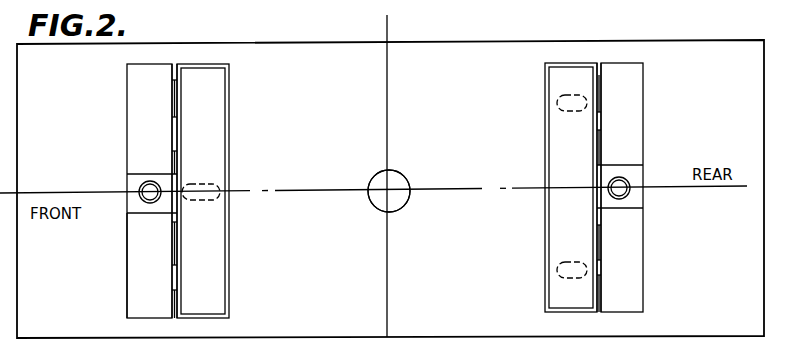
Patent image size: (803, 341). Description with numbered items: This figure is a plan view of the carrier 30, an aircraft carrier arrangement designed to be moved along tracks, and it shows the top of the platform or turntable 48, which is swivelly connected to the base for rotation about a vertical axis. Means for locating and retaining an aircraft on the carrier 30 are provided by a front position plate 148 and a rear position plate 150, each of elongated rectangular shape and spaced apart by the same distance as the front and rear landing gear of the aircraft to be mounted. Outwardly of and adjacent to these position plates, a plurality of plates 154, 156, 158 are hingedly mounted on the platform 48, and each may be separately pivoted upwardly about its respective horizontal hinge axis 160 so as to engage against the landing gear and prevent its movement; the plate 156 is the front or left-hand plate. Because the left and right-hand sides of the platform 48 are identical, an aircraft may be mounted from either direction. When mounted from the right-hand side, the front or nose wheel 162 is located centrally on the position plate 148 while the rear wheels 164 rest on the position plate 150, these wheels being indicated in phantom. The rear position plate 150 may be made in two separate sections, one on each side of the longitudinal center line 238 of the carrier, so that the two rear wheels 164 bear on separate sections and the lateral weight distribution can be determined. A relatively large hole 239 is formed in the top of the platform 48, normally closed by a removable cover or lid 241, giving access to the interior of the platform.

The carrier 30 is at (340, 40).
The platform or turntable 48 is at (470, 133).
The front position plate 148 is at (197, 284).
The rear position plate 150 is at (560, 216).
The hinged plate 154 is at (140, 106).
The hinged plate 156 is at (136, 198).
The hinged plate 158 is at (128, 262).
The horizontal hinge axis 160 is at (174, 80).
The front or nose wheel 162 is at (206, 187).
The rear wheels 164 is at (560, 100).
The longitudinal center line 238 is at (324, 190).
The hole 239 is at (402, 184).
The removable cover or lid 241 is at (396, 202).